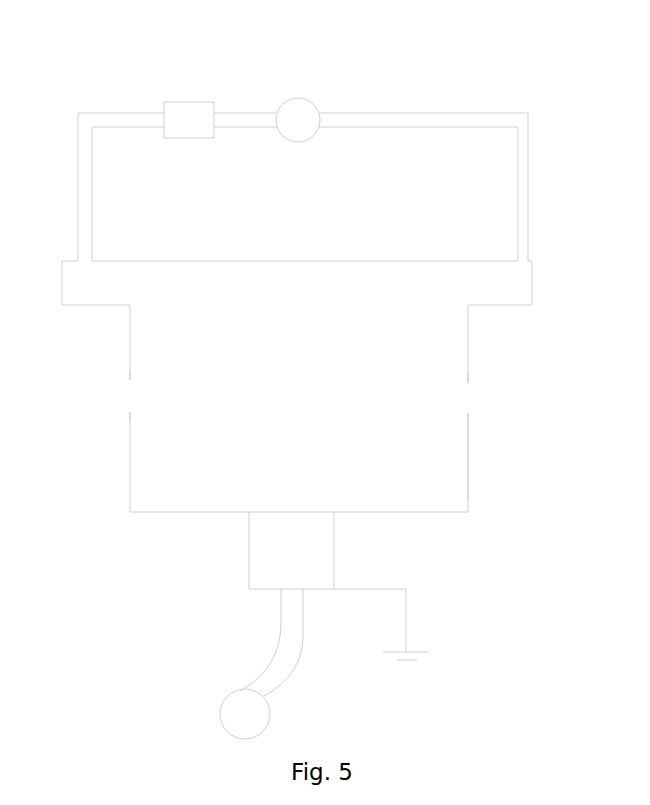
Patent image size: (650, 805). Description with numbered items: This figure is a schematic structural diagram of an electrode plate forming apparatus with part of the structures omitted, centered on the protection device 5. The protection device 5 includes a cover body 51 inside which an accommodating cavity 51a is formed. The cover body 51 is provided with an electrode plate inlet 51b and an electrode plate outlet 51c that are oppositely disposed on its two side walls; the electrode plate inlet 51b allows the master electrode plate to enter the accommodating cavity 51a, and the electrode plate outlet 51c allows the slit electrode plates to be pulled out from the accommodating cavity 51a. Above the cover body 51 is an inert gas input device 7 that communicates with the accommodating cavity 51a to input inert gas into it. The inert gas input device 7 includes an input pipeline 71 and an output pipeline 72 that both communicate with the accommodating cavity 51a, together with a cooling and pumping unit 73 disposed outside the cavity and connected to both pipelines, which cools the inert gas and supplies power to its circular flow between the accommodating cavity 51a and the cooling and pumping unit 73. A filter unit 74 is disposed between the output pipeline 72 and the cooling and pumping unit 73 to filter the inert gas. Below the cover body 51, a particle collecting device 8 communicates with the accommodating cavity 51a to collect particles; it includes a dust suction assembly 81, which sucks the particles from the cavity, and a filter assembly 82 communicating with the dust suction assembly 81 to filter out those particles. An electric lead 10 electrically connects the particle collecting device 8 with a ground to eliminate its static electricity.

The protection device 5 is at (543, 318).
The inert gas input device 7 is at (183, 47).
The particle collecting device 8 is at (147, 575).
The electric lead 10 is at (406, 600).
The cover body 51 is at (467, 492).
The accommodating cavity 51a is at (430, 453).
The electrode plate inlet 51b is at (133, 392).
The electrode plate outlet 51c is at (465, 399).
The input pipeline 71 is at (360, 118).
The output pipeline 72 is at (122, 120).
The cooling and pumping unit 73 is at (297, 113).
The filter unit 74 is at (193, 105).
The dust suction assembly 81 is at (263, 570).
The filter assembly 82 is at (245, 714).